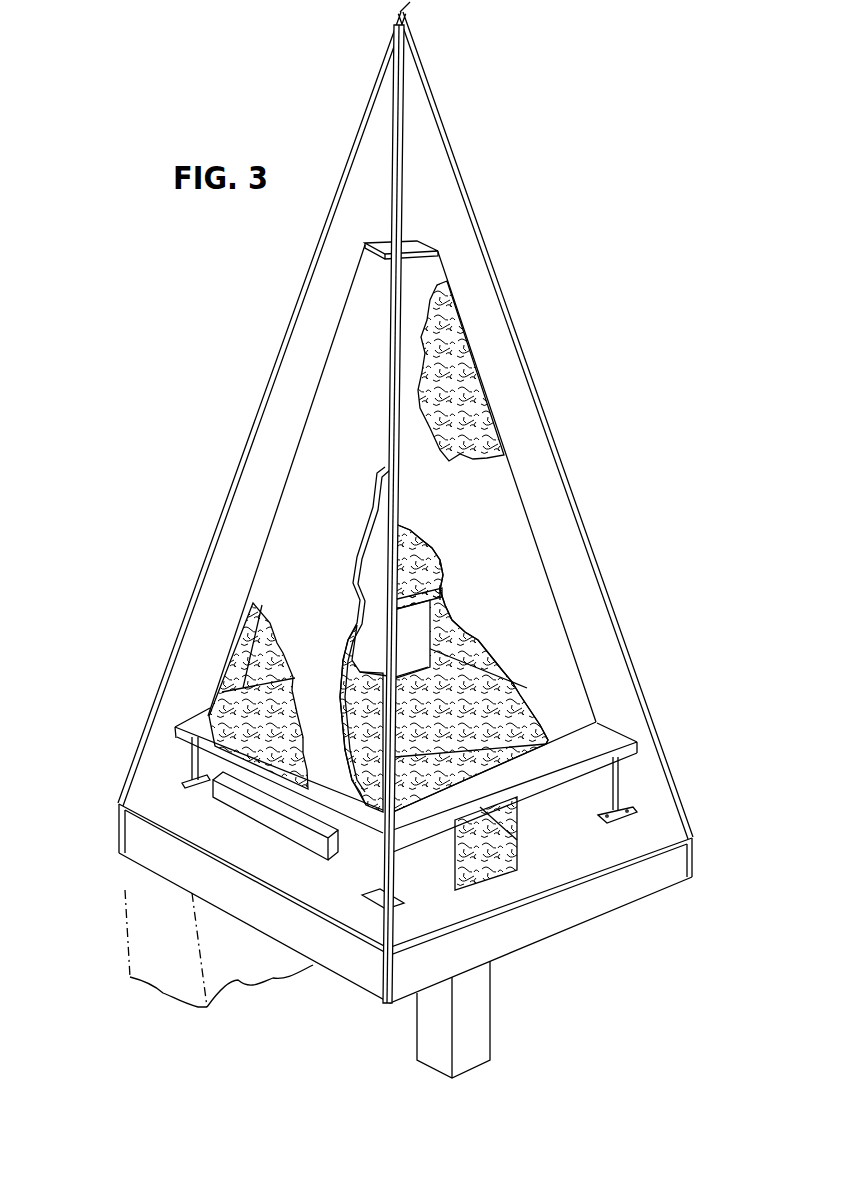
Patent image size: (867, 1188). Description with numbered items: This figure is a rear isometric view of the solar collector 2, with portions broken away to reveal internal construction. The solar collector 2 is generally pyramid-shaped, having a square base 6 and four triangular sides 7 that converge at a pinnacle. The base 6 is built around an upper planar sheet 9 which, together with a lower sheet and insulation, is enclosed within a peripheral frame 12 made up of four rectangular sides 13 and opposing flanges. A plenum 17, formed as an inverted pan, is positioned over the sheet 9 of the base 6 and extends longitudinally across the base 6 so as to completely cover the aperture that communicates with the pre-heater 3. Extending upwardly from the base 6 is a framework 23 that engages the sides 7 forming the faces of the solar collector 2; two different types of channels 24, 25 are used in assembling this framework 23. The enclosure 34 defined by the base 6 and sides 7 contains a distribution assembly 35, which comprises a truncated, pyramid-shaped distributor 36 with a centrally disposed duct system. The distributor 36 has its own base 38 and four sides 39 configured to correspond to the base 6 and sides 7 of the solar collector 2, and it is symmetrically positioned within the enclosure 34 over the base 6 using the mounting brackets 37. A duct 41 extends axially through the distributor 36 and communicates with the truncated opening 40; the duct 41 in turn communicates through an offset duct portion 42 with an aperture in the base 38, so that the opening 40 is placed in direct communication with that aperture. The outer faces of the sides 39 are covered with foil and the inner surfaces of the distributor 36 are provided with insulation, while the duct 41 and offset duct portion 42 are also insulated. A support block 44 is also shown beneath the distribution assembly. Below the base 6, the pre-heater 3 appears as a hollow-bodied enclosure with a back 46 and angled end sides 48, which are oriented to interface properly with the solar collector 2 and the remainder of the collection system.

The solar collector 2 is at (405, 420).
The pre-heater 3 is at (112, 927).
The base 6 is at (385, 918).
The triangular sides 7 is at (237, 530).
The upper planar sheet 9 is at (515, 890).
The peripheral frame 12 is at (370, 990).
The rectangular sides 13 is at (270, 915).
The plenum 17 is at (260, 811).
The framework 23 is at (405, 420).
The channel 24 is at (157, 832).
The channel 25 is at (405, 420).
The enclosure 34 is at (421, 435).
The distribution assembly 35 is at (195, 658).
The distributor 36 is at (507, 452).
The mounting brackets 37 is at (185, 772).
The base 38 is at (617, 742).
The sides 39 is at (297, 503).
The opening 40 is at (412, 232).
The duct 41 is at (413, 633).
The offset duct portion 42 is at (427, 683).
The support block 44 is at (513, 817).
The back 46 is at (227, 980).
The sides 48 is at (172, 978).